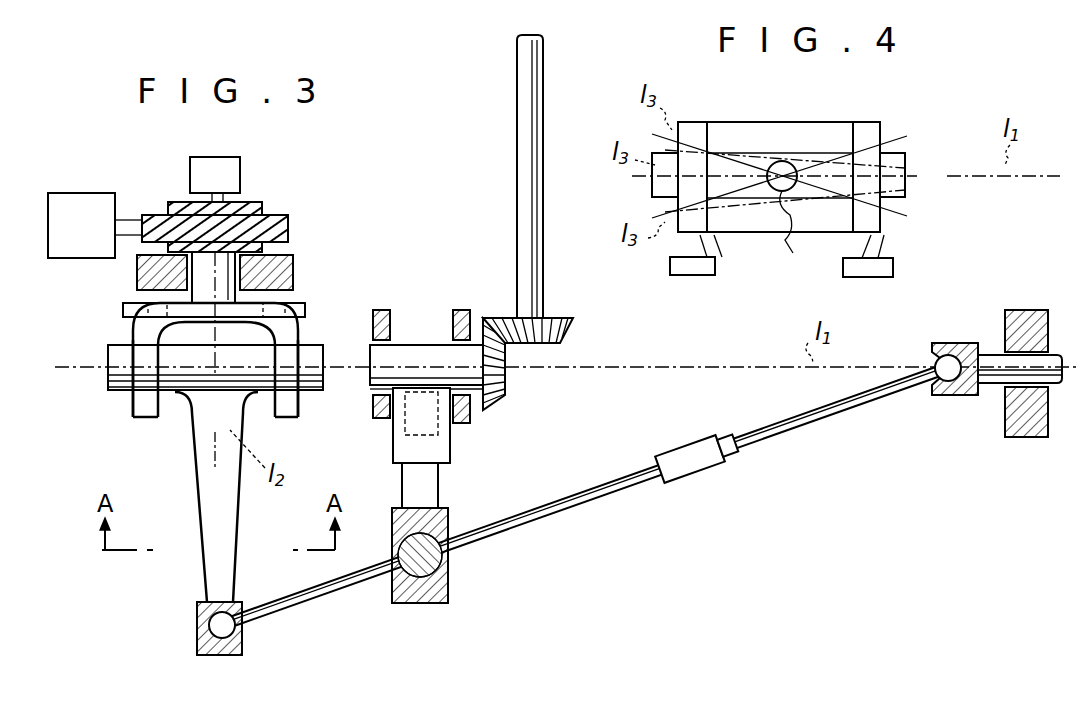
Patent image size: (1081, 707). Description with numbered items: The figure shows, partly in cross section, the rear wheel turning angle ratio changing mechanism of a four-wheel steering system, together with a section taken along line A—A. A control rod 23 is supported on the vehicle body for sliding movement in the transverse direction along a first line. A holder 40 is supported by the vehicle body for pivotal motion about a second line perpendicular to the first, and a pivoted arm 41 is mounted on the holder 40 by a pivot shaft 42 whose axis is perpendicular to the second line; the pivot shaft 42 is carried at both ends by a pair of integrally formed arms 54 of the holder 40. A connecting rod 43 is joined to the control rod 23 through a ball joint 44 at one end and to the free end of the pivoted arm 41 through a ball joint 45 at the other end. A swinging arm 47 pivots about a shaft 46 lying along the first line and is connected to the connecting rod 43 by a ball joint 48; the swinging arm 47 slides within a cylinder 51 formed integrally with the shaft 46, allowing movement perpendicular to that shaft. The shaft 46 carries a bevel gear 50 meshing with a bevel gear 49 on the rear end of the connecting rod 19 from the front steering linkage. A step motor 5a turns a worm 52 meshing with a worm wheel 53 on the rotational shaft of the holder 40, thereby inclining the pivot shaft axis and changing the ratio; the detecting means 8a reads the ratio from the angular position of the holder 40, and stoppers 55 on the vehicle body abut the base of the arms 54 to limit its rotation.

In FIG. 3, the step motor 5a is at (72, 193).
In FIG. 3, the rear wheel turning angle ratio detecting means 8a is at (190, 172).
In FIG. 3, the connecting rod 19 is at (517, 106).
In FIG. 3, the control rod 23 is at (993, 357).
In FIG. 3, the holder 40 is at (163, 298).
In FIG. 4, the holder 40 is at (785, 122).
In FIG. 3, the pivoted arm 41 is at (197, 496).
In FIG. 4, the pivoted arm 41 is at (789, 222).
In FIG. 3, the pivot shaft 42 is at (113, 390).
In FIG. 4, the pivot shaft 42 is at (897, 165).
In FIG. 3, the connecting rod 43 is at (633, 487).
In FIG. 3, the ball joint 44 is at (942, 395).
In FIG. 3, the ball joint 45 is at (197, 625).
In FIG. 3, the shaft 46 is at (417, 345).
In FIG. 3, the swinging arm 47 is at (440, 483).
In FIG. 3, the ball joint 48 is at (450, 563).
In FIG. 3, the bevel gear 49 is at (573, 330).
In FIG. 3, the bevel gear 50 is at (496, 405).
In FIG. 3, the cylinder 51 is at (390, 448).
In FIG. 3, the worm 52 is at (288, 225).
In FIG. 3, the worm wheel 53 is at (258, 202).
In FIG. 3, the arms 54 is at (145, 417).
In FIG. 4, the arms 54 is at (693, 132).
In FIG. 4, the stoppers 55 is at (695, 276).